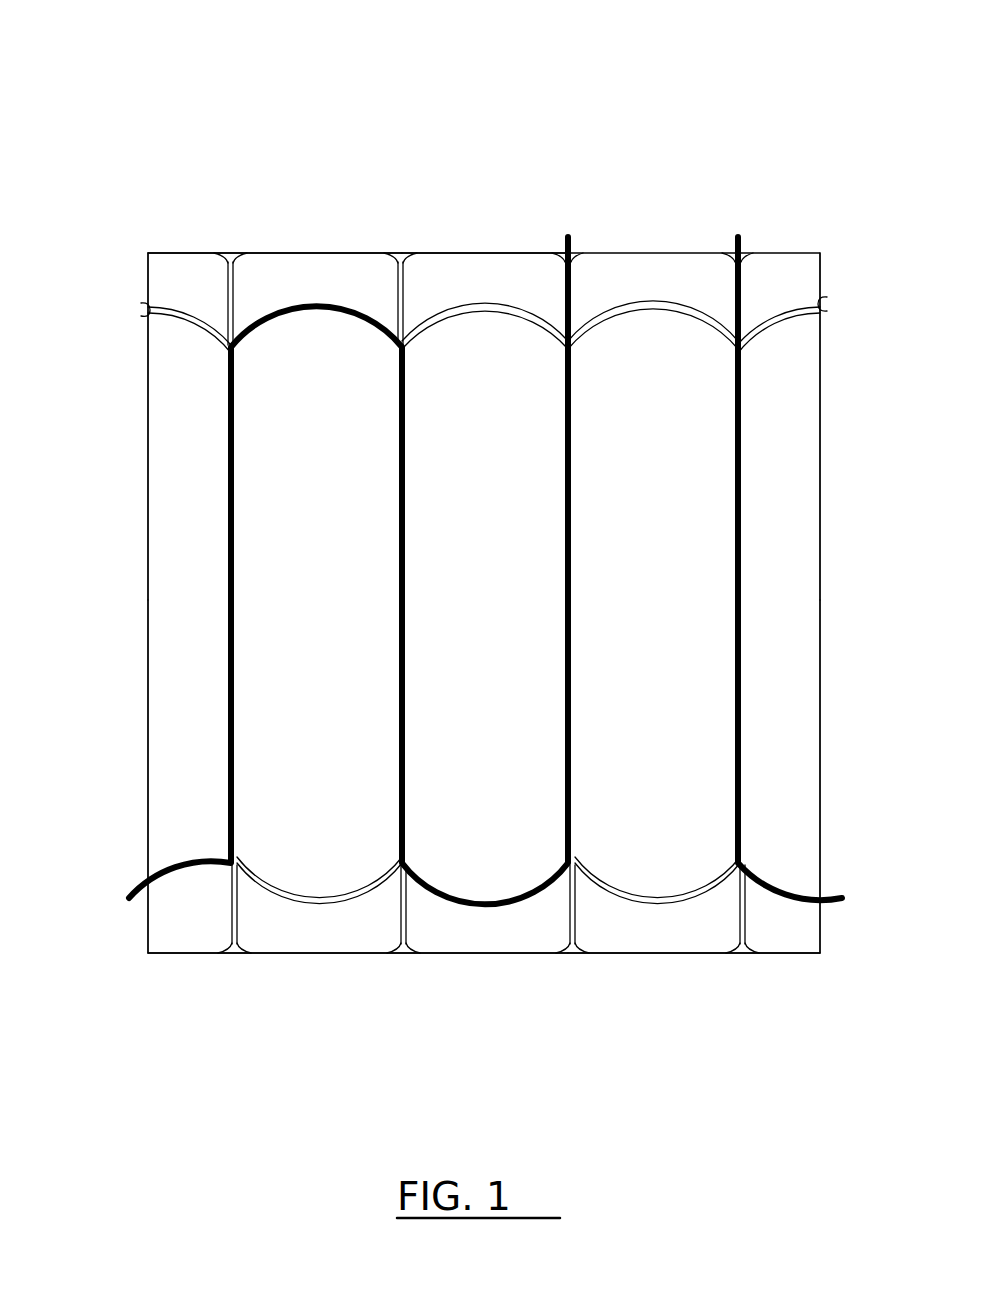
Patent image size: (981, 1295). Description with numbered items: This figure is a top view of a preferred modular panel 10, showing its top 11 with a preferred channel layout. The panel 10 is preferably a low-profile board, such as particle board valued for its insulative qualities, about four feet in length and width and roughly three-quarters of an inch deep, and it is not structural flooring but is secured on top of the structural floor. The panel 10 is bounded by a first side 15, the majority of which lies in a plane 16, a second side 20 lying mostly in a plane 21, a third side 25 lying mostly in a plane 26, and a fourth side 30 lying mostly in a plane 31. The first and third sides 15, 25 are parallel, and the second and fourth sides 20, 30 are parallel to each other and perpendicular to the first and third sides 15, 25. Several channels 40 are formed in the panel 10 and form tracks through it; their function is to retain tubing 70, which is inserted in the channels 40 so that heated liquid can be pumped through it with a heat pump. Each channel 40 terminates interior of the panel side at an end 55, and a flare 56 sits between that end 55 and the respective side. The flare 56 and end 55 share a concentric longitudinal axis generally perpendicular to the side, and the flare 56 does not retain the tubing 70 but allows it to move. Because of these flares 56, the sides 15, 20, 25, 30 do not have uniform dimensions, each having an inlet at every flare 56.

The panel 10 is at (681, 130).
The top 11 is at (480, 270).
The first side 15 is at (148, 525).
The plane 16 is at (148, 680).
The second side 20 is at (302, 253).
The plane 21 is at (450, 253).
The third side 25 is at (820, 473).
The plane 26 is at (820, 572).
The fourth side 30 is at (507, 953).
The plane 31 is at (680, 953).
The channel 40 is at (227, 290).
The end of the channel 55 is at (228, 258).
The flare 56 is at (235, 258).
The tubing 70 is at (745, 735).